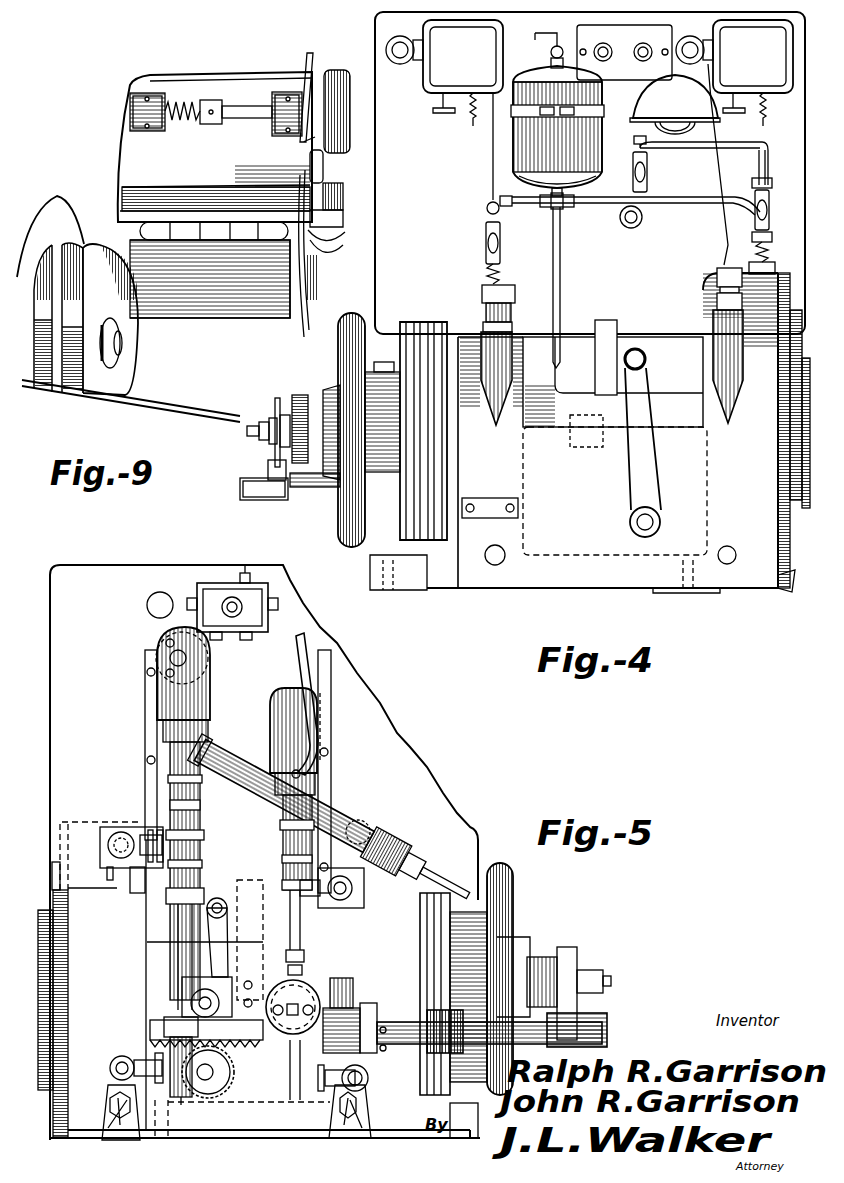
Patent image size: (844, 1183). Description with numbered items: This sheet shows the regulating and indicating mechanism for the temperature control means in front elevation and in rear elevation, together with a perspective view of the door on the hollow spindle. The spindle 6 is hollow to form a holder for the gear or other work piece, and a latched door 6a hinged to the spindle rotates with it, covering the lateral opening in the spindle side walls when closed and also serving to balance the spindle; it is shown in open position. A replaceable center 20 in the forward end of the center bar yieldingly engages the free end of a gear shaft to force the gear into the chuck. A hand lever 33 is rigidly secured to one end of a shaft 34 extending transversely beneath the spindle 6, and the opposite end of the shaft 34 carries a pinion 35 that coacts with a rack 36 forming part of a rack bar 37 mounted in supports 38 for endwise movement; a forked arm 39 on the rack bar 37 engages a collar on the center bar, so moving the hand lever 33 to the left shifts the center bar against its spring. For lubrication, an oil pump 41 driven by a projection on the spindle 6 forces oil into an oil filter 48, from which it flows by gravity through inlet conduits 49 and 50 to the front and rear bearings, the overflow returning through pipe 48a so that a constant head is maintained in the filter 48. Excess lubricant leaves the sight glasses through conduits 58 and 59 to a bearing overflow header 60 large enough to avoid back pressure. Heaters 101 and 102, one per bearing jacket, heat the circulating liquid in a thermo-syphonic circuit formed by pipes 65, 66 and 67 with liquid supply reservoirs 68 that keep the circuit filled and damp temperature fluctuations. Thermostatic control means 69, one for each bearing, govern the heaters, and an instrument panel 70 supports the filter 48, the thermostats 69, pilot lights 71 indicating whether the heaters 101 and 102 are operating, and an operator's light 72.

In FIG. 9, the spindle 6 is at (95, 242).
In FIG. 9, the door 6a is at (142, 151).
In FIG. 9, the replaceable center 20 is at (126, 352).
In FIG. 4, the thermostatic control means 69 is at (493, 52).
In FIG. 4, the instrument panel 70 is at (386, 264).
In FIG. 4, the pilot lights 71 is at (637, 49).
In FIG. 4, the operator's light 72 is at (675, 104).
In FIG. 4, the oil filter 48 is at (522, 156).
In FIG. 5, the pipe 48a is at (302, 663).
In FIG. 4, the inlet conduit 49 is at (684, 199).
In FIG. 4, the inlet conduit 50 is at (510, 201).
In FIG. 4, the conduit 58 is at (767, 168).
In FIG. 4, the hand lever 33 is at (656, 490).
In FIG. 4, the shaft 34 is at (630, 524).
In FIG. 5, the shaft 34 is at (214, 1072).
In FIG. 5, the pinion 35 is at (218, 1082).
In FIG. 5, the rack 36 is at (150, 1040).
In FIG. 5, the rack bar 37 is at (542, 1044).
In FIG. 5, the supports 38 is at (362, 1006).
In FIG. 5, the forked arm 39 is at (596, 1016).
In FIG. 5, the oil pump 41 is at (306, 993).
In FIG. 5, the conduit 59 is at (370, 828).
In FIG. 5, the bearing overflow header 60 is at (340, 828).
In FIG. 5, the pipe 65 is at (110, 1070).
In FIG. 5, the pipe 66 is at (122, 834).
In FIG. 5, the pipe 67 is at (178, 936).
In FIG. 5, the liquid supply reservoirs 68 is at (207, 703).
In FIG. 5, the heater 101 is at (122, 1140).
In FIG. 5, the heater 102 is at (345, 1138).